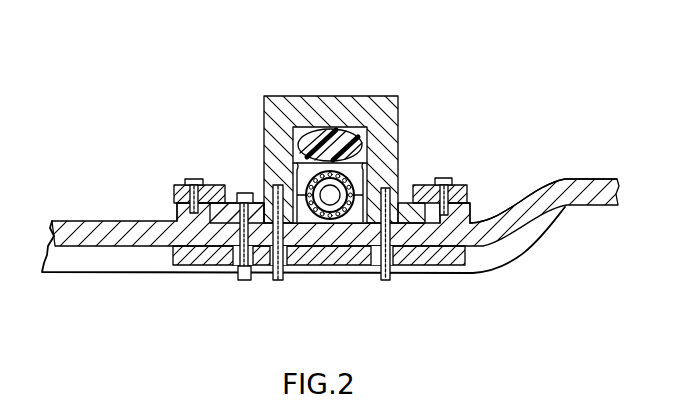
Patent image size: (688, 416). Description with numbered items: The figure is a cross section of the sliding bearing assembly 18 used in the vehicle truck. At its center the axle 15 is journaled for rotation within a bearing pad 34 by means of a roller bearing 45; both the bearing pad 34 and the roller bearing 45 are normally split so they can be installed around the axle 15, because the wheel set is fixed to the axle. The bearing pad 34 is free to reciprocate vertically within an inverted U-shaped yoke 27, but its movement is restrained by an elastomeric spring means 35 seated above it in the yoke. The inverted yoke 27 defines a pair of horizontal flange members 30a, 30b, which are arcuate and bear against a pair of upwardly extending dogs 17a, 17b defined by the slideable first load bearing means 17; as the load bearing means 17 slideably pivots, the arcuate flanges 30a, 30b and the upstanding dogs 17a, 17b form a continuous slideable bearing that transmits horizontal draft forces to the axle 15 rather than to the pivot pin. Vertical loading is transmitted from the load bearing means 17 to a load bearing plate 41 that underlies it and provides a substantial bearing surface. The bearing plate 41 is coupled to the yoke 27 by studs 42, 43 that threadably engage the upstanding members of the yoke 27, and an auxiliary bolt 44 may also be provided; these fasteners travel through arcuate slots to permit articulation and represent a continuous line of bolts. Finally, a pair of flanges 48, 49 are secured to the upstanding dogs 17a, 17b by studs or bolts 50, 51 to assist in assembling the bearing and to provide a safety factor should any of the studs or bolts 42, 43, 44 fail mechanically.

The axle 15 is at (328, 197).
The first load bearing means 17 is at (83, 246).
The upwardly extending dog 17a is at (176, 220).
The upwardly extending dog 17b is at (468, 214).
The bearing assembly 18 is at (350, 96).
The inverted U-shaped yoke 27 is at (272, 107).
The horizontal flange member 30a is at (233, 200).
The horizontal flange member 30b is at (402, 203).
The bearing pad 34 is at (297, 165).
The elastomeric spring means 35 is at (352, 137).
The load bearing plate 41 is at (440, 267).
The stud 42 is at (280, 281).
The stud 43 is at (385, 281).
The auxiliary bolt 44 is at (243, 281).
The roller bearing 45 is at (363, 166).
The flange 48 is at (173, 198).
The flange 49 is at (560, 178).
The stud or bolt 50 is at (194, 179).
The stud or bolt 51 is at (453, 181).